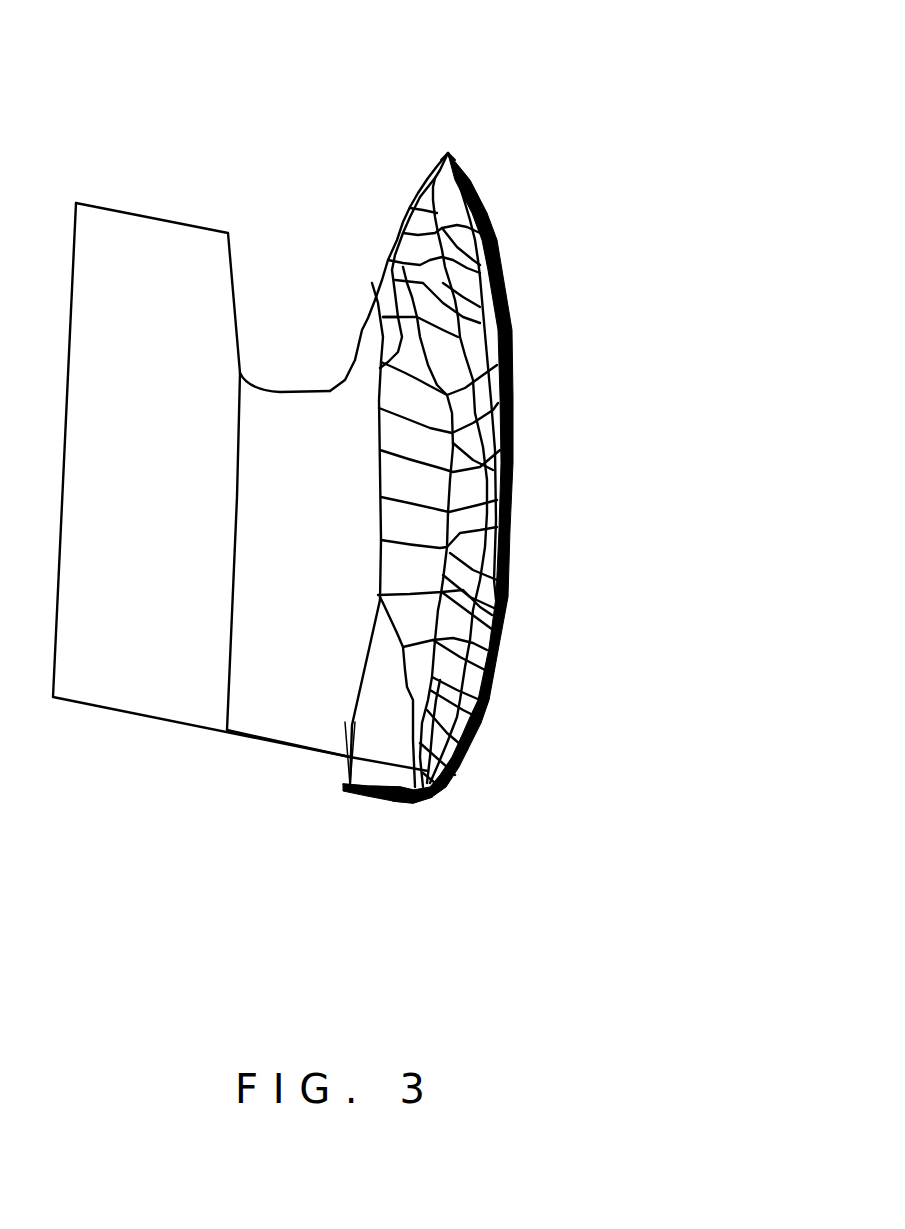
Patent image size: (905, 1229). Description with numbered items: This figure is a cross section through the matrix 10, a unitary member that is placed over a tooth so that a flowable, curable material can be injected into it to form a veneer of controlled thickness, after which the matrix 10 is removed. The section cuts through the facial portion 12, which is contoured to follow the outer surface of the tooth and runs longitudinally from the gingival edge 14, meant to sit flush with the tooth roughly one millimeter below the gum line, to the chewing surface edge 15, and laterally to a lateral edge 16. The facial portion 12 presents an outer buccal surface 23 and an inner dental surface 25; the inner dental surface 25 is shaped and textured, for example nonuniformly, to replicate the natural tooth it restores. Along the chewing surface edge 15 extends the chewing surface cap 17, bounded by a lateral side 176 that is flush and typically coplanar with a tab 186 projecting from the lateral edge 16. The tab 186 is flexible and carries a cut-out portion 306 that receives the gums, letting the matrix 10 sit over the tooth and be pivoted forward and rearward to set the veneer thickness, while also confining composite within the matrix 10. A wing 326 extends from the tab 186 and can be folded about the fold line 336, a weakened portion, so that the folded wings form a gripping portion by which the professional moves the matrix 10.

The matrix 10 is at (604, 182).
The facial portion 12 is at (484, 180).
The gingival edge 14 is at (448, 148).
The chewing surface edge 15 is at (418, 805).
The lateral edge 16 is at (380, 452).
The chewing surface cap 17 is at (346, 790).
The outer buccal surface 23 is at (390, 303).
The inner dental surface 25 is at (500, 598).
The bottom band 176 is at (372, 797).
The panel compartment 186 is at (327, 561).
The notch 306 is at (302, 387).
The panel 326 is at (165, 377).
The divider 336 is at (237, 507).